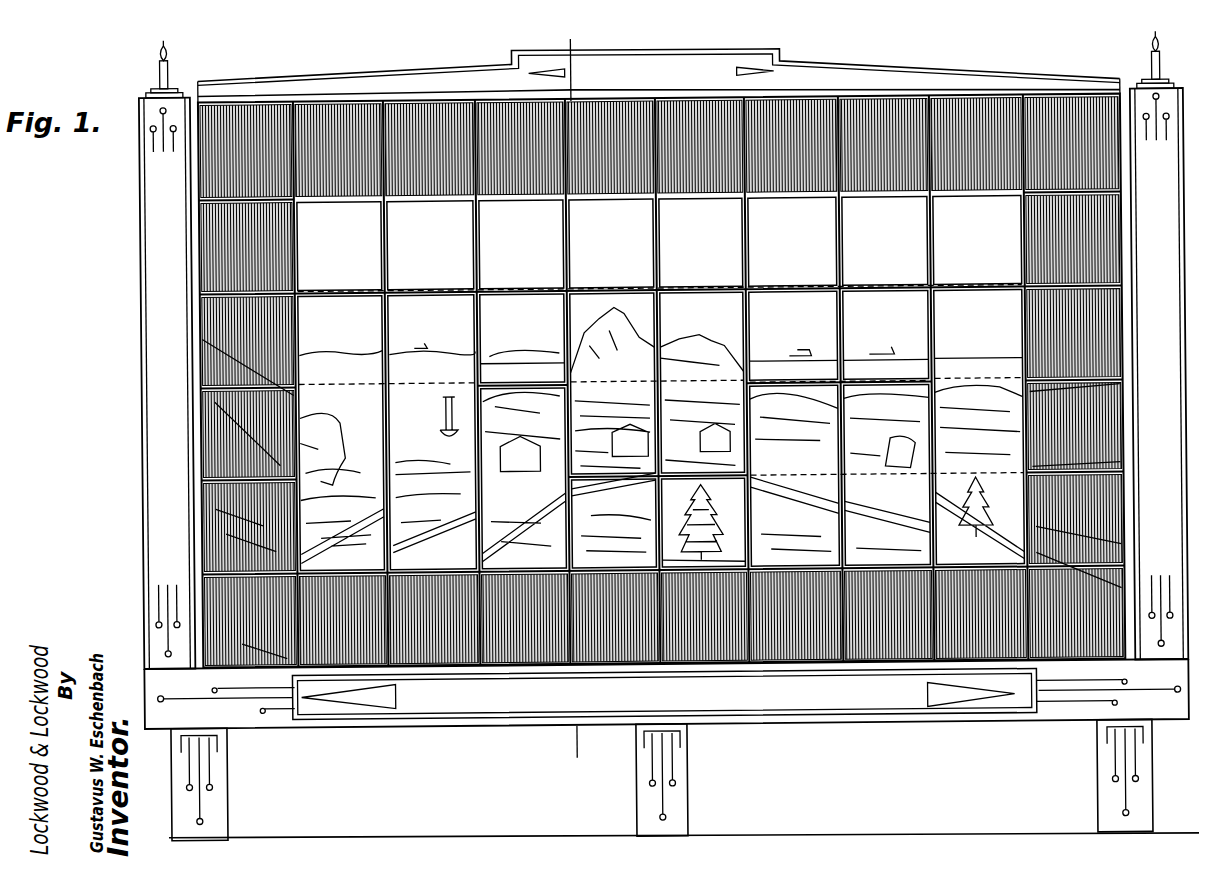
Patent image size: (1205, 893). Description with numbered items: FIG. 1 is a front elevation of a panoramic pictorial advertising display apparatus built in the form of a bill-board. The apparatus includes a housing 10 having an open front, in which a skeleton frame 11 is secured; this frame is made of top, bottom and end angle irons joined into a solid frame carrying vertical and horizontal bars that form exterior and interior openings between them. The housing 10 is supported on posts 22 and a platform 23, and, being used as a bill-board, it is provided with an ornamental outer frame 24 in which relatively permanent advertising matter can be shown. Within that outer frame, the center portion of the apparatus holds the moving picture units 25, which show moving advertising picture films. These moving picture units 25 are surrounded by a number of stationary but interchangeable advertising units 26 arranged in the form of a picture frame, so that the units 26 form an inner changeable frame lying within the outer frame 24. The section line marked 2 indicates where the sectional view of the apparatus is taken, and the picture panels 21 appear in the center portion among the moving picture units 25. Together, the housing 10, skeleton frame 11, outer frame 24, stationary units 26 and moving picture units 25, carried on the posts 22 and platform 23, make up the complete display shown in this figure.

The section line of Fig. 2 is at (596, 745).
The housing 10 is at (131, 275).
The skeleton frame 11 is at (781, 113).
The panoramic picture panels 21 is at (661, 430).
The posts 22 is at (1097, 790).
The platform 23 is at (353, 725).
The ornamental outer frame 24 is at (1062, 720).
The moving picture units 25 is at (659, 266).
The stationary advertising units 26 is at (1106, 649).